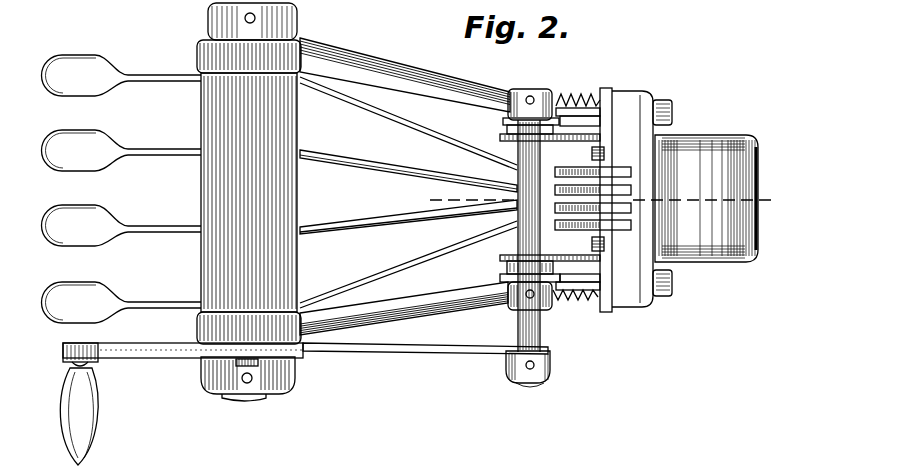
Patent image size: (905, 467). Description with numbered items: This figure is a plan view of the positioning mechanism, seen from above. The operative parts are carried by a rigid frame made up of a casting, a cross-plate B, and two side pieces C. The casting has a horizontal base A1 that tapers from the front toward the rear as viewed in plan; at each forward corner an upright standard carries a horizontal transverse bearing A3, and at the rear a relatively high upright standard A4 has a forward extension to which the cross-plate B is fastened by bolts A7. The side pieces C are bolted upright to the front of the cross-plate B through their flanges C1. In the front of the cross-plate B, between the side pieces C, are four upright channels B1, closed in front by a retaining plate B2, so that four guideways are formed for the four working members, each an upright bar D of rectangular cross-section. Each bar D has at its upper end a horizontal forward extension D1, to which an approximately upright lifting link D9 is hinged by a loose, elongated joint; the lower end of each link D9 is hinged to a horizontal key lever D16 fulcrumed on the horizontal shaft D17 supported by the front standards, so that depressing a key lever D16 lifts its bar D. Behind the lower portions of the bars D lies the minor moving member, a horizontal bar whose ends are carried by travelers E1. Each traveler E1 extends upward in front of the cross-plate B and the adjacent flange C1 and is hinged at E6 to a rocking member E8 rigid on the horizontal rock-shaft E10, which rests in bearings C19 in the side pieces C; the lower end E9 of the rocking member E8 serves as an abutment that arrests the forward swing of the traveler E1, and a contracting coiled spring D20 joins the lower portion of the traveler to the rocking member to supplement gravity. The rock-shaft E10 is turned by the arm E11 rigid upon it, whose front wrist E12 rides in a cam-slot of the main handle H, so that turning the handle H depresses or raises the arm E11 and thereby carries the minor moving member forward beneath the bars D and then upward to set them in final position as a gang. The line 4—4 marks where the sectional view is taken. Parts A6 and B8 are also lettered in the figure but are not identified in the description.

The horizontal base A1 is at (362, 70).
The transverse bearing A3 is at (200, 57).
The rear upright standard A4 is at (745, 264).
The lug A6 is at (657, 102).
The bolts A7 is at (674, 109).
The cross-plate B is at (632, 100).
The upright channels B1 is at (618, 232).
The retaining plate B2 is at (592, 154).
The stop block B8 is at (592, 243).
The side pieces C is at (503, 260).
The flanges C1 is at (607, 90).
The bearings C19 is at (505, 122).
The bar D is at (618, 178).
The forward extension D1 is at (540, 213).
The lifting link D9 is at (516, 166).
The key lever D16 is at (382, 165).
The shaft D17 is at (252, 400).
The contracting coiled spring D20 is at (565, 106).
The traveler E1 is at (589, 114).
The hinge E6 is at (583, 302).
The rocking member E8 is at (511, 118).
The lower end of rocking member E9 is at (575, 98).
The rock-shaft E10 is at (530, 385).
The arm E11 is at (400, 352).
The wrist E12 is at (258, 366).
The main handle H is at (104, 356).
The section line 4 is at (599, 200).